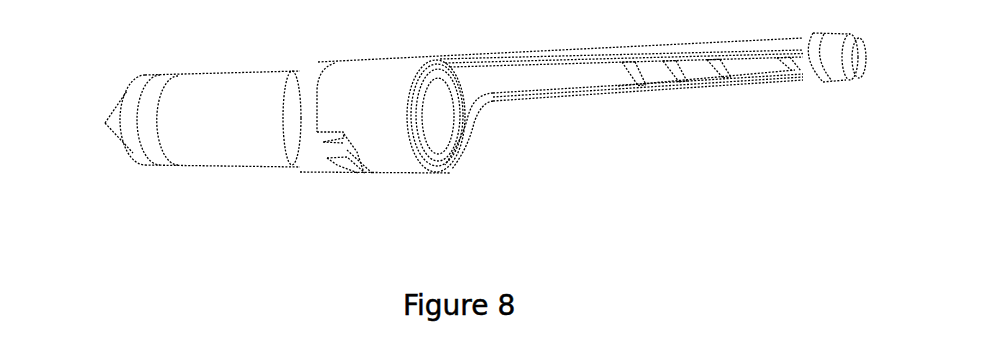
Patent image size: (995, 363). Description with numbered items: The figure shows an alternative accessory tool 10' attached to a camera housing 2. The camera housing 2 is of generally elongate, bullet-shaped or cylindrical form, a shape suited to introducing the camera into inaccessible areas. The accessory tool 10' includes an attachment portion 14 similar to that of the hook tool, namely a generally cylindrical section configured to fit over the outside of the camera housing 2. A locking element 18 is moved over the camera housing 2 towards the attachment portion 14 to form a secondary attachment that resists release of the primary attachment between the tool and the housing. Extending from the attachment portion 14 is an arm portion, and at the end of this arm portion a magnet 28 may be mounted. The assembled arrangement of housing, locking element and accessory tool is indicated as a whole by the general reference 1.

The cleaning device 1 is at (357, 215).
The camera housing 2 is at (245, 133).
The locking element 18 is at (320, 153).
The attachment portion 14 is at (393, 155).
The accessory tool 10' is at (621, 116).
The magnet 28 is at (840, 62).